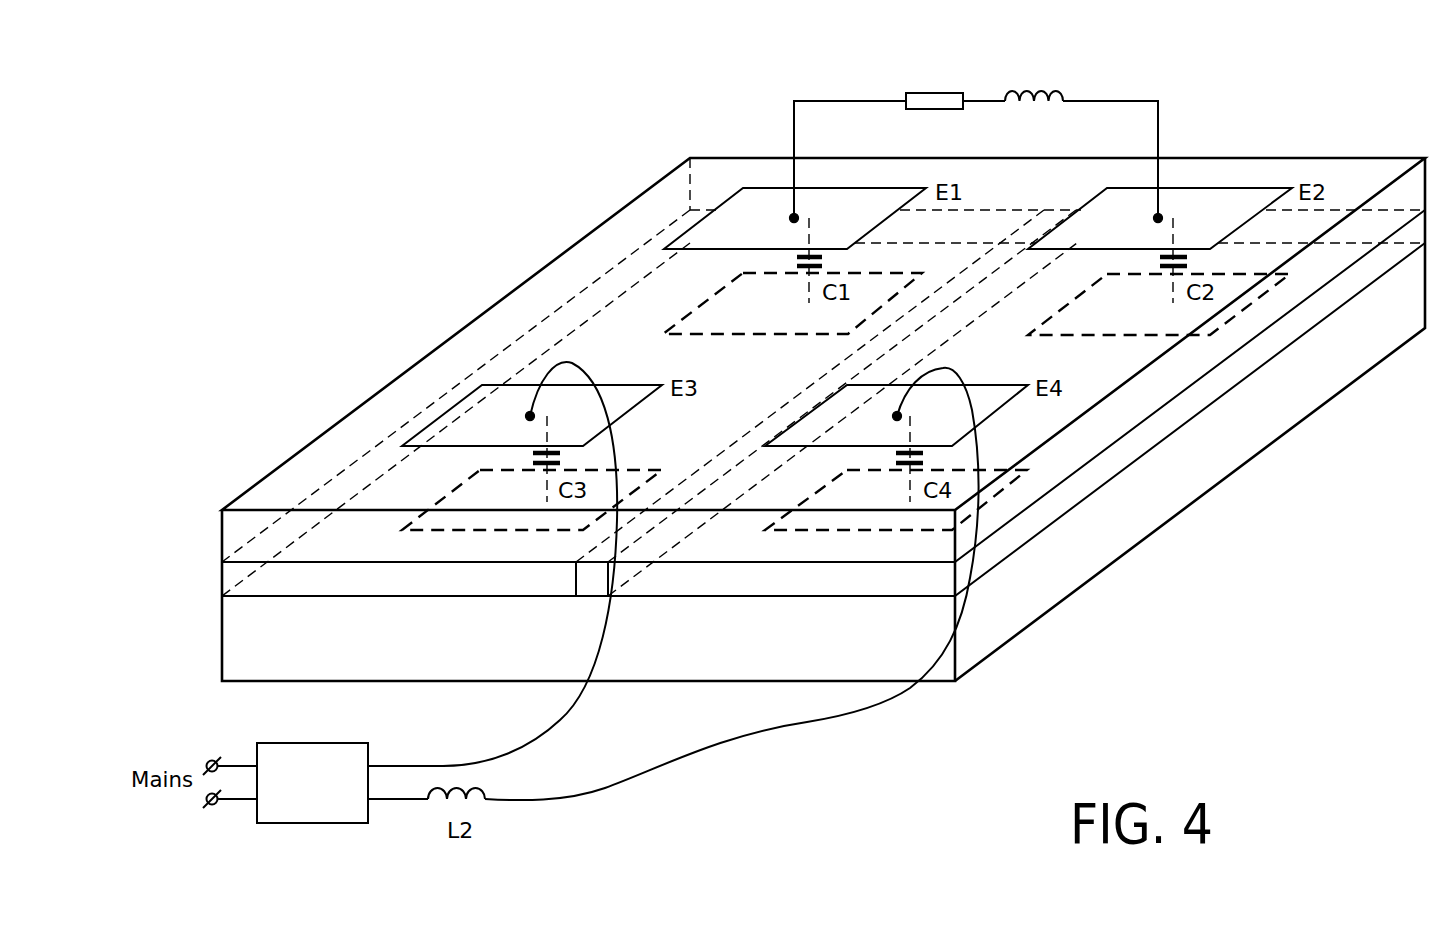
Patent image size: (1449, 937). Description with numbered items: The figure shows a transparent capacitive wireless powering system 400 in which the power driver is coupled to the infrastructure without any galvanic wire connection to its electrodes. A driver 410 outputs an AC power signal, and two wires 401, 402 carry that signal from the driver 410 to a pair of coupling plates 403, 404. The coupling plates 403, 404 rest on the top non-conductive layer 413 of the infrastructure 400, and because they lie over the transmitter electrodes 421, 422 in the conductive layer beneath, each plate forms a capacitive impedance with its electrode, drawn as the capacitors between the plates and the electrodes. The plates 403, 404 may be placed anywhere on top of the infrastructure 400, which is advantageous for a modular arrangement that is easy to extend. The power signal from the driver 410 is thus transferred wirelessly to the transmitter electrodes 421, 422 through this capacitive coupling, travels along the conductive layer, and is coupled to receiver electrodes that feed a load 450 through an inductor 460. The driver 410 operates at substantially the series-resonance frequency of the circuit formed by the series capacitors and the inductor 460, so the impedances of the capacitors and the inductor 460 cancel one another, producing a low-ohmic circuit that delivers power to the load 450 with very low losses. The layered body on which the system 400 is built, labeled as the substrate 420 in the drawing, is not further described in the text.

The transparent capacitive wireless powering system 400 is at (261, 131).
The wire 401 is at (650, 765).
The wire 402 is at (567, 717).
The coupling plate 403 is at (874, 432).
The coupling plate 404 is at (510, 432).
The driver 410 is at (333, 816).
The top non-conductive layer 413 is at (1011, 368).
The transparent non-conductive substrate 420 is at (1233, 472).
The transmitter electrode 421 is at (987, 555).
The transmitter electrode 422 is at (220, 582).
The load 450 is at (934, 91).
The inductor 460 is at (1039, 91).